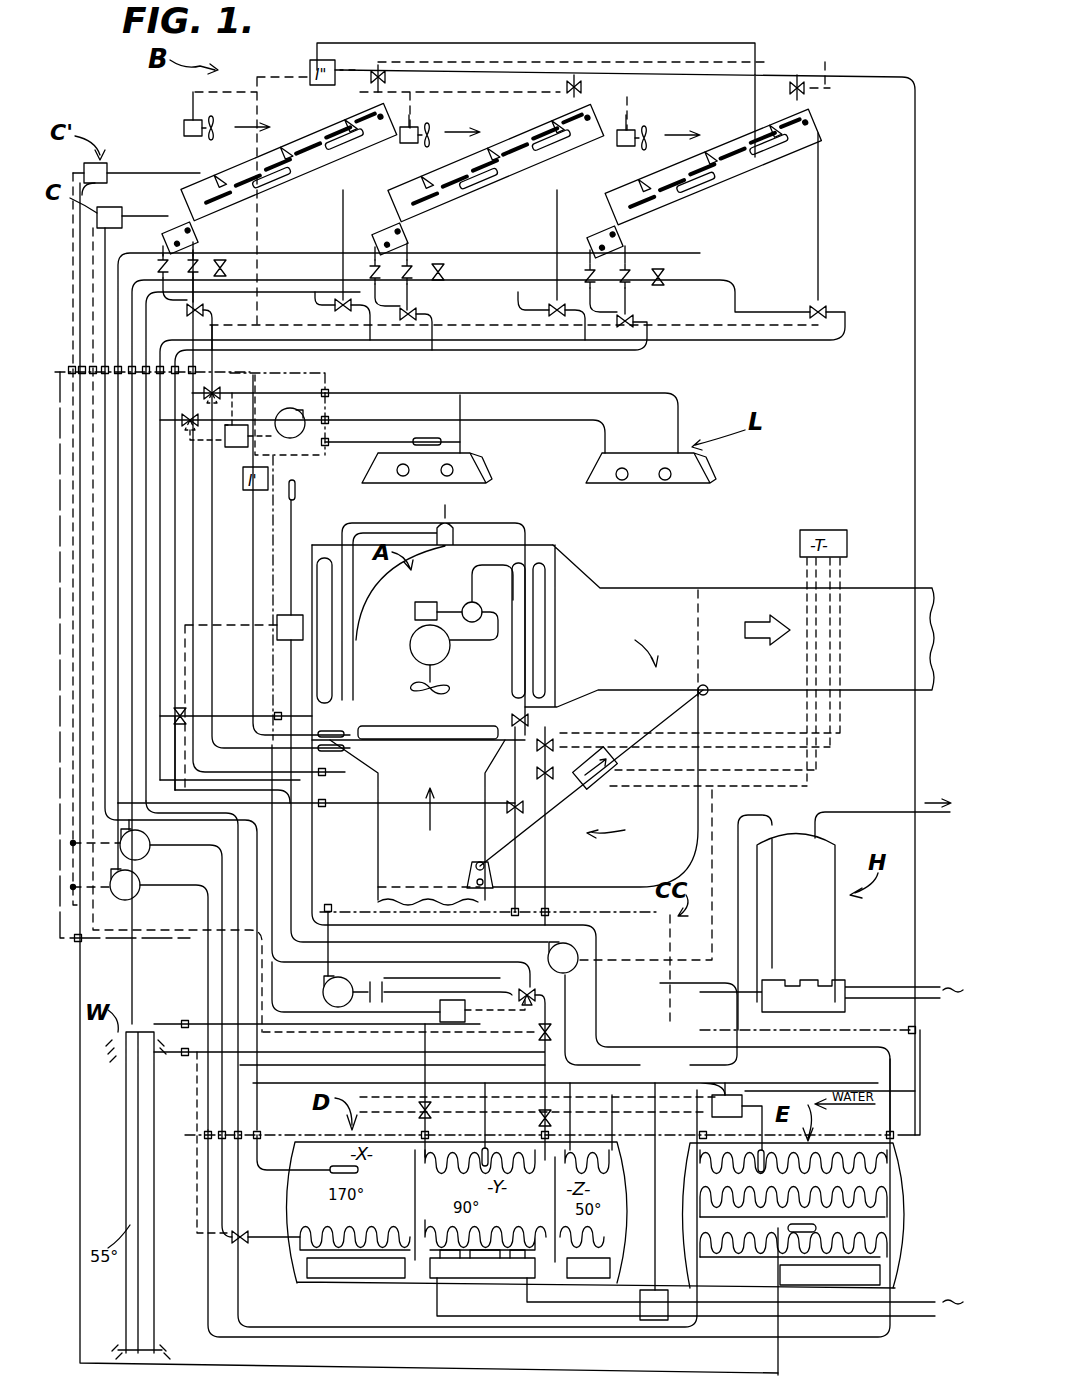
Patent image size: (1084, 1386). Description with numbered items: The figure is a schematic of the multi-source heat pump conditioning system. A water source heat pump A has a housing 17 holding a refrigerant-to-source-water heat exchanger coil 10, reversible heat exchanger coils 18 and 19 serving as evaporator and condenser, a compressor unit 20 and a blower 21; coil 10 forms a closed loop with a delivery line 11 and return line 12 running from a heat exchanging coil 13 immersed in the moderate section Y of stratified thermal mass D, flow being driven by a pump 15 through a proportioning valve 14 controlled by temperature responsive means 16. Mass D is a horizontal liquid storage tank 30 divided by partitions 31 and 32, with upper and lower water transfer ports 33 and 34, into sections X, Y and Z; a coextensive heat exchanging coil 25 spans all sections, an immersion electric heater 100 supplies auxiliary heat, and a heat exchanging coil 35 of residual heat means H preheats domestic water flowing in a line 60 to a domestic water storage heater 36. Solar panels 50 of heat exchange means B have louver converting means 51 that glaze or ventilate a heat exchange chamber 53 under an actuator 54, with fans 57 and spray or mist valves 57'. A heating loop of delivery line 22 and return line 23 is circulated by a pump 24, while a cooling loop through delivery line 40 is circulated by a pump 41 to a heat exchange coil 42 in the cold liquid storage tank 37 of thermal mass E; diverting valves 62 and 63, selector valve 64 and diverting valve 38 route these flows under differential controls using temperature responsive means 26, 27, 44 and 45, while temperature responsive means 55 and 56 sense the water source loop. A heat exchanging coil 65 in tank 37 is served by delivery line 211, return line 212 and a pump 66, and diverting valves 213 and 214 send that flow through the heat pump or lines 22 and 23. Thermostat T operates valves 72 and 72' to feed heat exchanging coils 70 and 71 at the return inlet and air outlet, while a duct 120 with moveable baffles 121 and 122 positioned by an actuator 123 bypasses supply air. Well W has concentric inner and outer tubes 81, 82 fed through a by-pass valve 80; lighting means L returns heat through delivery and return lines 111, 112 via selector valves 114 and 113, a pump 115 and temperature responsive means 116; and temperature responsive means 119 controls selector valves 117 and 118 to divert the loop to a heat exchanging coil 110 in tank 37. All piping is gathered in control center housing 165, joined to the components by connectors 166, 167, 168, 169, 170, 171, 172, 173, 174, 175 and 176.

The refrigerant to source water heat exchanger coil 10 is at (320, 545).
The delivery line 11 is at (175, 552).
The return line 12 is at (160, 582).
The heat exchanging coil 13 is at (485, 1166).
The proportioning valve 14 is at (510, 985).
The pump 15 is at (417, 959).
The temperature responsive means 16 is at (482, 1011).
The housing 17 is at (440, 535).
The heat exchanger coil 18 is at (333, 627).
The heat exchanger coil 19 is at (545, 603).
The compressor unit 20 is at (456, 621).
The blower 21 is at (408, 666).
The delivery line 22 is at (105, 290).
The return line 23 is at (93, 312).
The pump 24 is at (152, 1028).
The heat exchanging coil 25 is at (366, 1232).
The temperature responsive means 26 is at (240, 213).
The temperature responsive means 27 is at (330, 1168).
The liquid storage tank 30 is at (385, 1283).
The partition 31 is at (415, 1180).
The partition 32 is at (555, 1208).
The upper water transfer ports 33 is at (415, 1135).
The lower water transfer ports 34 is at (552, 1285).
The heat exchanging coil 35 is at (610, 1160).
The domestic water storage heater 36 is at (838, 942).
The liquid storage tank 37 is at (888, 1282).
The diverting valve 38 is at (248, 1230).
The delivery line 40 is at (118, 265).
The pump 41 is at (140, 966).
The heat exchange coil 42 is at (893, 1236).
The temperature responsive means 44 is at (290, 175).
The temperature responsive means 45 is at (818, 1228).
The solar panels 50 is at (325, 160).
The converting means 51 is at (295, 168).
The heat exchange chamber 53 is at (285, 182).
The actuator 54 is at (170, 232).
The temperature responsive means 55 is at (335, 722).
The temperature responsive means 56 is at (338, 750).
The fans 57 is at (424, 121).
The spray or mist valves 57' is at (611, 86).
The line 60 is at (831, 995).
The diverting valve 62 is at (228, 268).
The diverting valve 63 is at (203, 306).
The selector valve 64 is at (330, 307).
The heat exchanging coil 65 is at (890, 1168).
The pump 66 is at (563, 957).
The heat exchanging coil 70 is at (405, 740).
The heat exchanging coil 71 is at (547, 648).
The valve 72 is at (565, 745).
The valve 72' is at (548, 716).
The by-pass valve 80 is at (537, 1035).
The inner tube 81 is at (138, 1146).
The outer tube 82 is at (126, 1120).
The immersion electric heater 100 is at (460, 1278).
The heat exchanging coil 110 is at (887, 1197).
The delivery line 111 is at (515, 393).
The return line 112 is at (520, 420).
The selector valve 113 is at (186, 410).
The selector valve 114 is at (212, 390).
The pump 115 is at (290, 423).
The temperature responsive means 116 is at (237, 425).
The selector valve 117 is at (430, 1103).
The selector valve 118 is at (537, 1118).
The temperature responsive means 119 is at (737, 1116).
The duct 120 is at (602, 857).
The moveable baffle 121 is at (700, 628).
The moveable baffle 122 is at (405, 880).
The actuator 123 is at (612, 772).
The housing 165 is at (374, 900).
The connectors 166 is at (270, 714).
The connector 167 is at (277, 630).
The connectors 168 is at (180, 370).
The connectors 169 is at (80, 368).
The connectors 170 is at (330, 390).
The connector 171 is at (328, 446).
The connectors 172 is at (182, 1020).
The connector 173 is at (430, 1132).
The connector 174 is at (885, 1136).
The connector 175 is at (205, 1137).
The connector 176 is at (805, 1030).
The delivery line 211 is at (566, 990).
The return line 212 is at (597, 990).
The diverting valve 213 is at (508, 810).
The diverting valve 214 is at (559, 775).